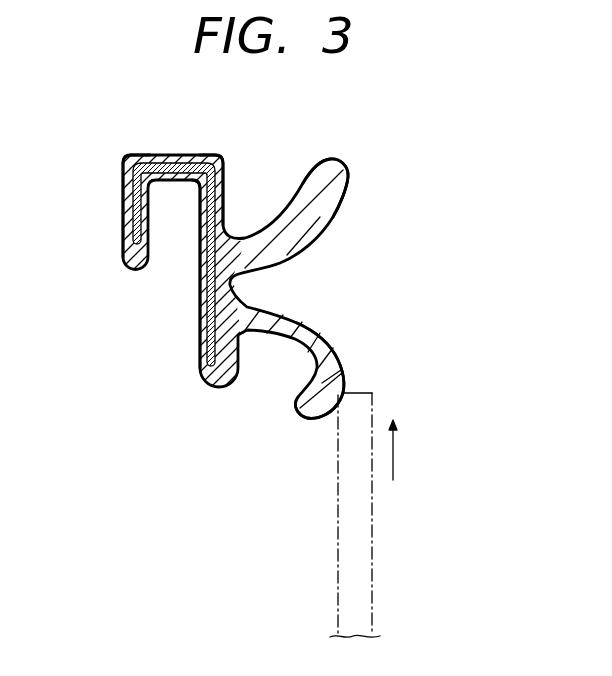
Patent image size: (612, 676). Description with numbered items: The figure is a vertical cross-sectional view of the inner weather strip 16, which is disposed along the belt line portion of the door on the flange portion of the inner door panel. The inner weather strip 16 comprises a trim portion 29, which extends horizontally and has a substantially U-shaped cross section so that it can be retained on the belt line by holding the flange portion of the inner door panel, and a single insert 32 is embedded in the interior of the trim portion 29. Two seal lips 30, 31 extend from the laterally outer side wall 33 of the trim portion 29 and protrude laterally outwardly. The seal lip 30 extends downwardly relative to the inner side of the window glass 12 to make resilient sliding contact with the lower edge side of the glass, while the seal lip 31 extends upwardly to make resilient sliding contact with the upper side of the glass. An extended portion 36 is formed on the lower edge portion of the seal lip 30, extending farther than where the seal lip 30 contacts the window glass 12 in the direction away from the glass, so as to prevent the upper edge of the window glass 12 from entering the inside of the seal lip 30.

The inner weather strip 16 is at (188, 150).
The trim portion 29 is at (141, 156).
The laterally outer side wall 33 is at (226, 192).
The insert 32 is at (212, 295).
The seal lip 31 is at (339, 160).
The seal lip 30 is at (337, 350).
The extended portion 36 is at (296, 413).
The window glass 12 is at (372, 525).